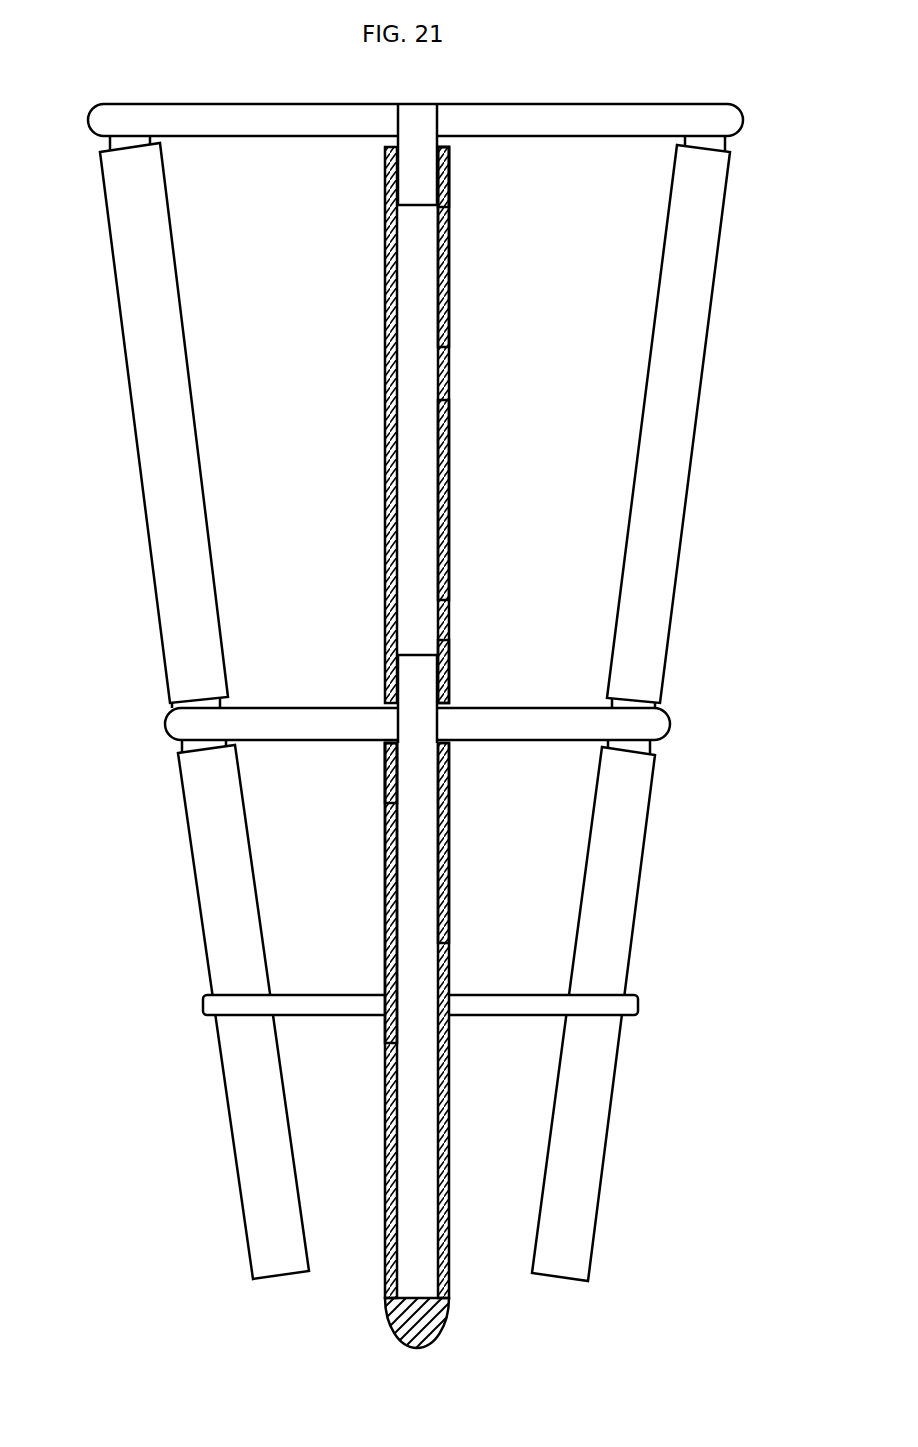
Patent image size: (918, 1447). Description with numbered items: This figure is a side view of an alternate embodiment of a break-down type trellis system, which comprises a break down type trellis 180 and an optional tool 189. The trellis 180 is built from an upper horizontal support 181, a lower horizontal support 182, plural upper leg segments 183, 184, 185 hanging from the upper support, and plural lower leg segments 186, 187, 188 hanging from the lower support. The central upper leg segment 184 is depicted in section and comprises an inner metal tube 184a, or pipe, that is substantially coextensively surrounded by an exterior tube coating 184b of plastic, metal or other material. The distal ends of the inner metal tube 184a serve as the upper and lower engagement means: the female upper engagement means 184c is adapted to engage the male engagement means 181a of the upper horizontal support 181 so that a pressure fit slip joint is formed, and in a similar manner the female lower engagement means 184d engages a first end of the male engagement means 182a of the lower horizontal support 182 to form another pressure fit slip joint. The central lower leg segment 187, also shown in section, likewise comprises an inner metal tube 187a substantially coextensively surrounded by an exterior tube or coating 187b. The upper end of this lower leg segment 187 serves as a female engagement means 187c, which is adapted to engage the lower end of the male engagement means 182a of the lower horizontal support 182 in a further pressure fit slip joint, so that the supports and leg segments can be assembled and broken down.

The break down type trellis 180 is at (238, 70).
The upper horizontal support 181 is at (490, 115).
The male engagement means 181a is at (408, 127).
The lower horizontal support 182 is at (467, 715).
The male engagement means 182a is at (417, 728).
The upper leg segment 183 is at (133, 492).
The upper leg segment 184 is at (373, 402).
The inner metal tube 184a is at (449, 275).
The exterior tube coating 184b is at (449, 505).
The female upper engagement means 184c is at (457, 175).
The female lower engagement means 184d is at (458, 670).
The upper leg segment 185 is at (685, 500).
The lower leg segment 186 is at (192, 902).
The lower leg segment 187 is at (373, 1150).
The inner metal tube 187a is at (447, 813).
The exterior tube or coating 187b is at (383, 950).
The female engagement means 187c is at (373, 768).
The lower leg segment 188 is at (642, 938).
The tool 189 is at (300, 995).